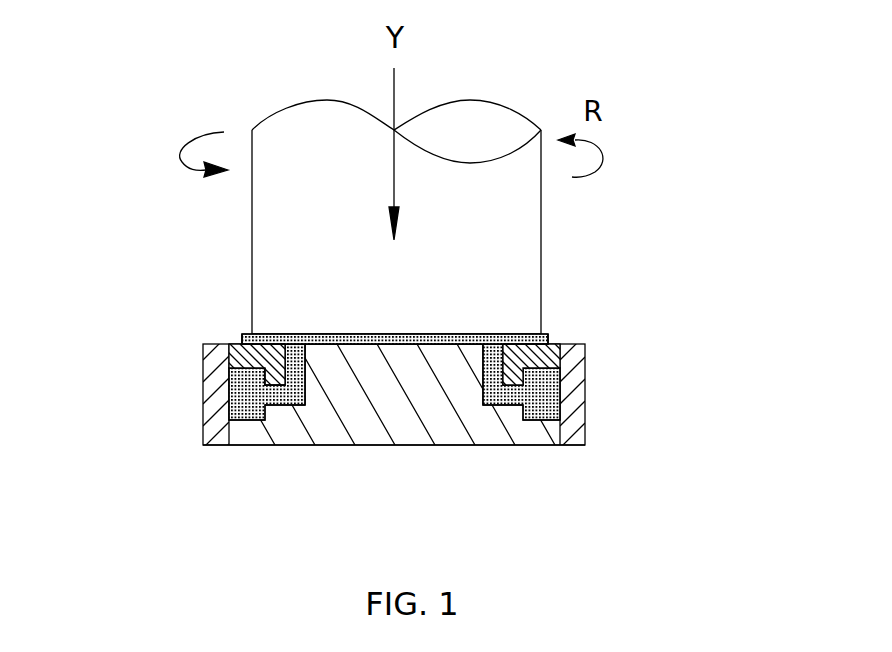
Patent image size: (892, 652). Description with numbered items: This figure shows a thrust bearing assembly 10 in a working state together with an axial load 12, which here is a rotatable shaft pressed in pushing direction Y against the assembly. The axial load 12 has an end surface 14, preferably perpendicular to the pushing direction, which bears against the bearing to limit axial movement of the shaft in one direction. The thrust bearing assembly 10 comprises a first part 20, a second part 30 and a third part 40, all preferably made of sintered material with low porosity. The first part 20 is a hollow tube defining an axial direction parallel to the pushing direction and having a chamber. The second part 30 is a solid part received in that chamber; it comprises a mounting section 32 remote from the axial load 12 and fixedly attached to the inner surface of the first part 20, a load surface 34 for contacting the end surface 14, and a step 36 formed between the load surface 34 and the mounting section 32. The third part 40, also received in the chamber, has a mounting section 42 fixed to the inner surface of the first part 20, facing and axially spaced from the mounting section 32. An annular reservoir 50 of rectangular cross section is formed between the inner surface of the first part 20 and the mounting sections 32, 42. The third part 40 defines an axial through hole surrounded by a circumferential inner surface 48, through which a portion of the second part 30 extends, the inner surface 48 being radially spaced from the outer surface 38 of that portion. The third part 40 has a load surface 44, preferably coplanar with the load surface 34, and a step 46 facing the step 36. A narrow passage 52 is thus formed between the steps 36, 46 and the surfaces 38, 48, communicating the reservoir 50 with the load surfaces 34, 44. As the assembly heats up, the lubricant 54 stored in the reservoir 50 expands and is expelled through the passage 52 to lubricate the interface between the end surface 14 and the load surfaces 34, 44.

The thrust bearing assembly 10 is at (605, 443).
The axial load 12 is at (510, 247).
The end surface 14 is at (402, 333).
The first part 20 is at (585, 408).
The second part 30 is at (405, 393).
The mounting section 32 is at (232, 432).
The load surface 34 is at (358, 344).
The step 36 is at (492, 405).
The outer surface 38 is at (305, 390).
The third part 40 is at (525, 337).
The mounting section 42 is at (562, 353).
The load surface 44 is at (248, 361).
The step 46 is at (518, 378).
The inner surface 48 is at (250, 335).
The annular reservoir 50 is at (245, 397).
The narrow passage 52 is at (285, 383).
The lubricant 54 is at (467, 333).